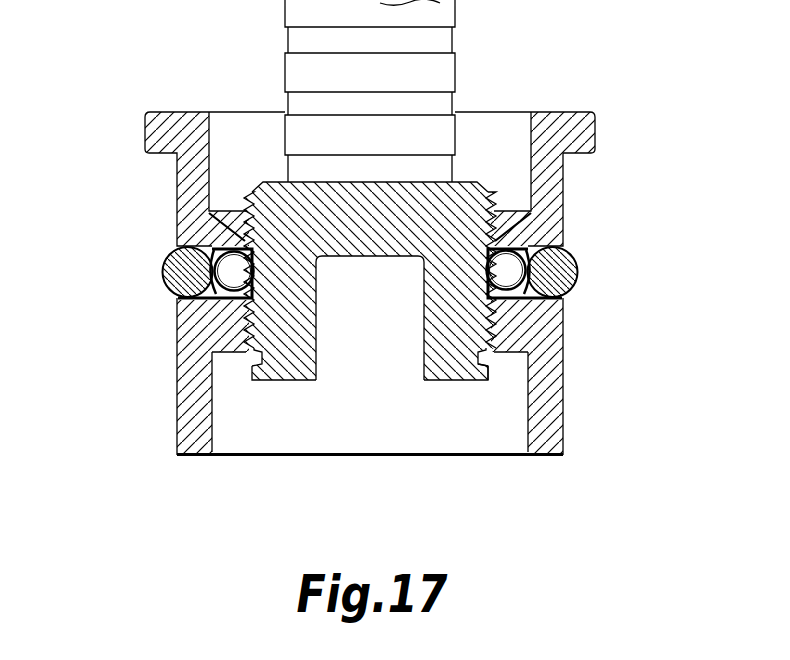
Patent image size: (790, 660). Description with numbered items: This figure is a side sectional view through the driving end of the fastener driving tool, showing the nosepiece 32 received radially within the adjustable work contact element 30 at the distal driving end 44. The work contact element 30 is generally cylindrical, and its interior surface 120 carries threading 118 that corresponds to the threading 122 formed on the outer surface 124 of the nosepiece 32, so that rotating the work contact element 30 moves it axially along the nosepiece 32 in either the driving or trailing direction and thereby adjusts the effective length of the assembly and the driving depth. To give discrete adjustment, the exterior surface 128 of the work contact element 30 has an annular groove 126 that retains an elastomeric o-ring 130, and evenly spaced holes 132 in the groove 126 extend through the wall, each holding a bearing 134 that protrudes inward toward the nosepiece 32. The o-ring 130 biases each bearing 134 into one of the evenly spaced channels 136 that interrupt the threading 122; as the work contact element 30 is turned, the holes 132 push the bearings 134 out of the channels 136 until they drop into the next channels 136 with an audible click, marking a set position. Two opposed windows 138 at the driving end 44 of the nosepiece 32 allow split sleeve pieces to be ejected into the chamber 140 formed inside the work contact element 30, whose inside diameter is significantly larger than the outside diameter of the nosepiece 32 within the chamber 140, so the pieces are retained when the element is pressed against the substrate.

The work contact element 30 is at (177, 165).
The nosepiece 32 is at (445, 77).
The distal driving end 44 is at (488, 352).
The threading 118 is at (283, 366).
The interior surface 120 is at (483, 340).
The threading 122 is at (500, 212).
The outer surface 124 is at (209, 213).
The annular groove 126 is at (212, 248).
The exterior surface 128 is at (565, 383).
The o-ring 130 is at (172, 270).
The holes 132 is at (228, 298).
The bearing 134 is at (233, 281).
The channels 136 is at (250, 350).
The windows 138 is at (377, 323).
The chamber 140 is at (240, 437).